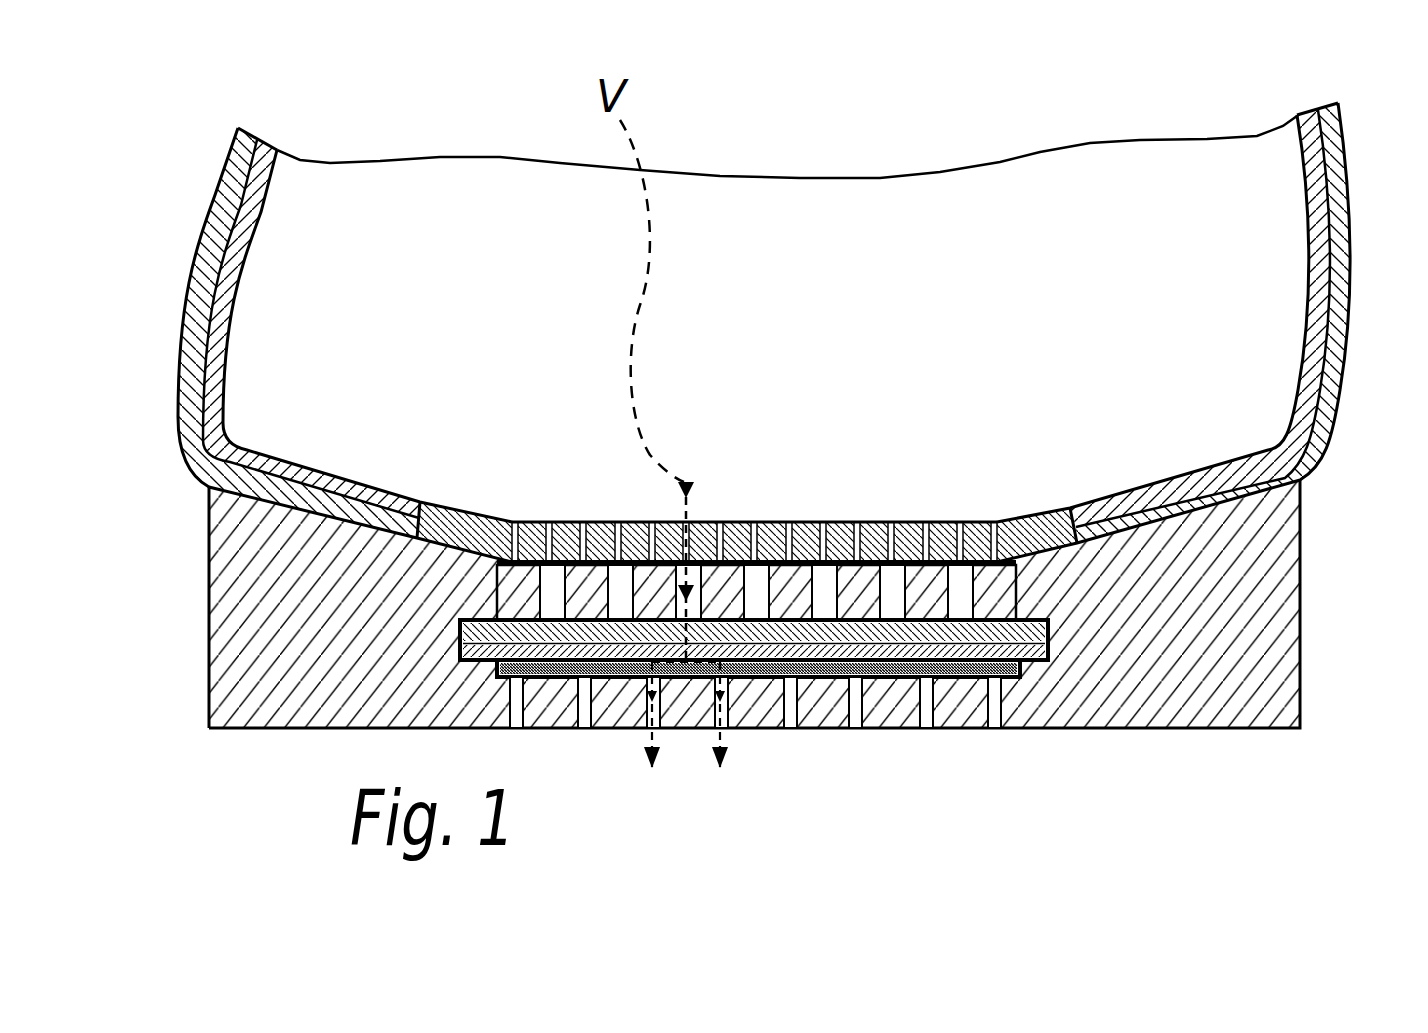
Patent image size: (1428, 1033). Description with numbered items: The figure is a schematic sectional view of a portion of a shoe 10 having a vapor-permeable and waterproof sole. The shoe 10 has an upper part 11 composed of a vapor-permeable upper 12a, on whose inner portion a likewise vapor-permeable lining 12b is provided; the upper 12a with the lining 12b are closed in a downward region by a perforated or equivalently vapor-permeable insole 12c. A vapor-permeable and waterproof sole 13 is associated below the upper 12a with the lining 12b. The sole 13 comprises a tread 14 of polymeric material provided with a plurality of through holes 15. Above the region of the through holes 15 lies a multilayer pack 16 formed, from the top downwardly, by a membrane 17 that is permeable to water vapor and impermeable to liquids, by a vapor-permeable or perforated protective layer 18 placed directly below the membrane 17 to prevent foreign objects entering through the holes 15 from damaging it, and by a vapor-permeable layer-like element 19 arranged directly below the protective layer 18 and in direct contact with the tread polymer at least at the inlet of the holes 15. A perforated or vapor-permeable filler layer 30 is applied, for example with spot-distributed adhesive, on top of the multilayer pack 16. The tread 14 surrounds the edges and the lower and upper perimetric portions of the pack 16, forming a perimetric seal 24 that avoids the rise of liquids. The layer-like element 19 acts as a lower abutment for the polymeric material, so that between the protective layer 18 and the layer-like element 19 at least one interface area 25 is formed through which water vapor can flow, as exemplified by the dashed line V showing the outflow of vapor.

The shoe 10 is at (772, 301).
The upper part 11 is at (1368, 187).
The vapor-permeable upper 12a is at (1340, 267).
The vapor-permeable lining 12b is at (1315, 236).
The perforated insole 12c is at (535, 528).
The sole 13 is at (736, 495).
The tread 14 is at (1050, 710).
The through holes 15 is at (788, 720).
The multilayer pack 16 is at (736, 701).
The membrane 17 is at (985, 612).
The protective layer 18 is at (950, 652).
The layer-like element 19 is at (893, 672).
The perimetric seal 24 is at (1050, 658).
The interface area 25 is at (747, 673).
The filler layer 30 is at (930, 578).